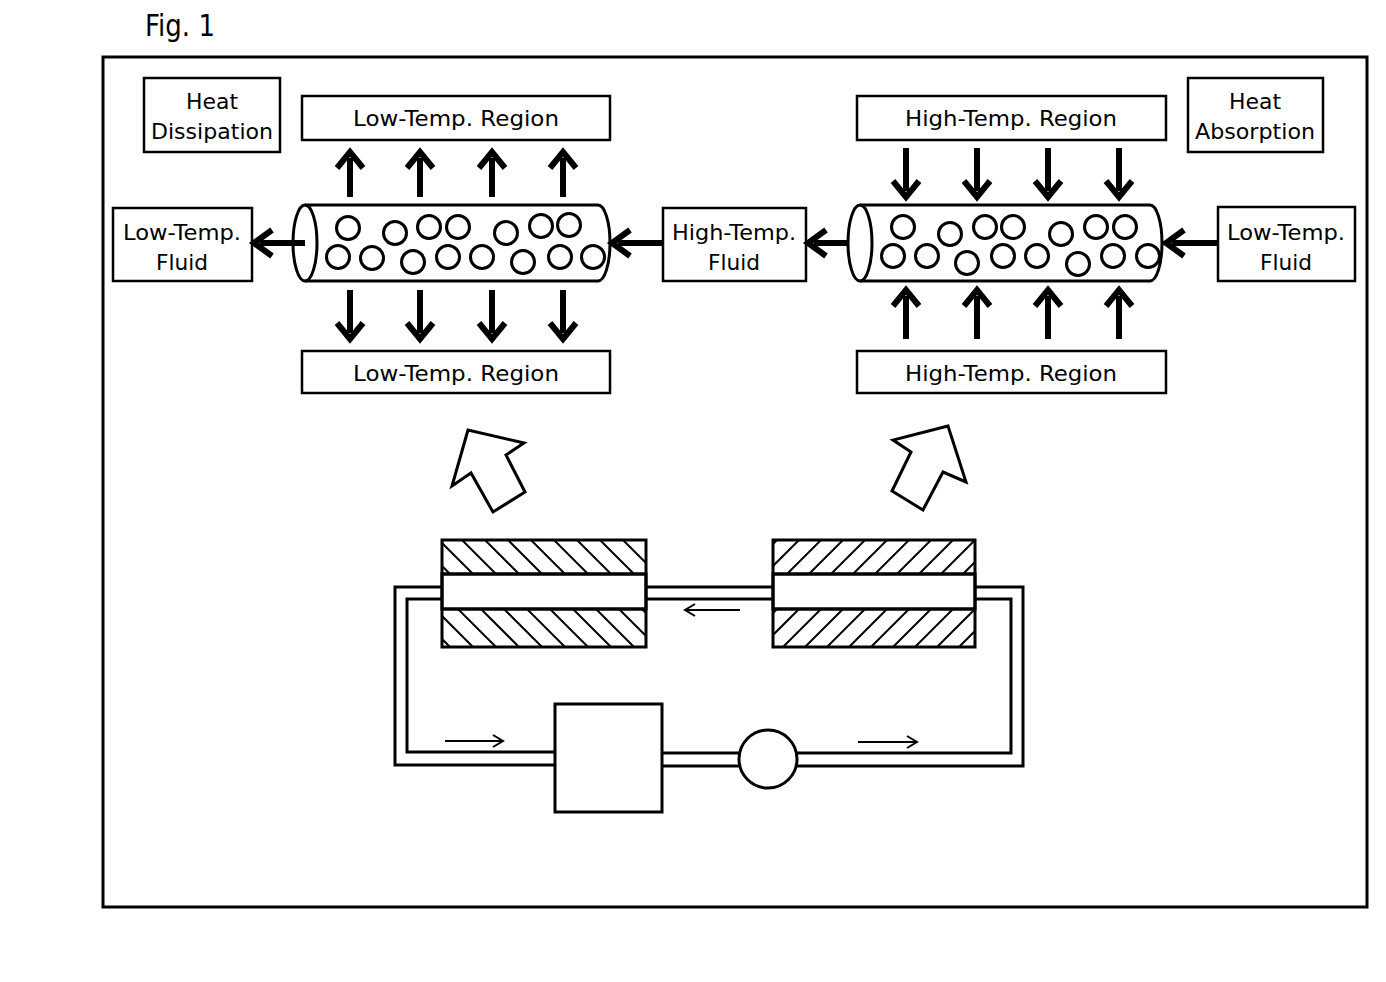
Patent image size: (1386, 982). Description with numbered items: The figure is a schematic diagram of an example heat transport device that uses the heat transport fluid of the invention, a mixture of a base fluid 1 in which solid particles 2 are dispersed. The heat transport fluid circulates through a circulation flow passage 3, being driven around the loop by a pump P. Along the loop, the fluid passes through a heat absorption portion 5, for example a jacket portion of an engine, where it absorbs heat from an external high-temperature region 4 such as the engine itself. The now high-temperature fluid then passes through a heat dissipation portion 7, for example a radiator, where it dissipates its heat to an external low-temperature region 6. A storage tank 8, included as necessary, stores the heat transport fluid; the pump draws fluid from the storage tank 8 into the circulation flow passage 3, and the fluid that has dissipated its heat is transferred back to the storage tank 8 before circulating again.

The base fluid 1 is at (582, 276).
The solid particles 2 is at (571, 224).
The circulation flow passage 3 is at (1022, 655).
The external high-temperature region 4 is at (927, 552).
The heat absorption portion 5 is at (938, 586).
The external low-temperature region 6 is at (538, 552).
The heat dissipation portion 7 is at (619, 587).
The storage tank 8 is at (608, 812).